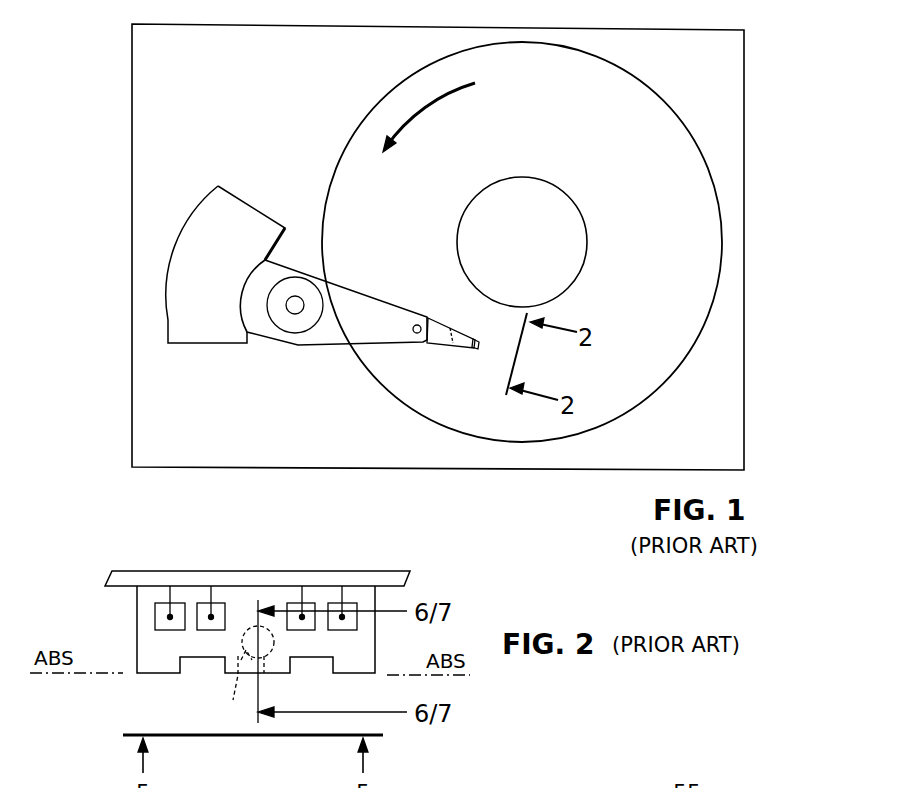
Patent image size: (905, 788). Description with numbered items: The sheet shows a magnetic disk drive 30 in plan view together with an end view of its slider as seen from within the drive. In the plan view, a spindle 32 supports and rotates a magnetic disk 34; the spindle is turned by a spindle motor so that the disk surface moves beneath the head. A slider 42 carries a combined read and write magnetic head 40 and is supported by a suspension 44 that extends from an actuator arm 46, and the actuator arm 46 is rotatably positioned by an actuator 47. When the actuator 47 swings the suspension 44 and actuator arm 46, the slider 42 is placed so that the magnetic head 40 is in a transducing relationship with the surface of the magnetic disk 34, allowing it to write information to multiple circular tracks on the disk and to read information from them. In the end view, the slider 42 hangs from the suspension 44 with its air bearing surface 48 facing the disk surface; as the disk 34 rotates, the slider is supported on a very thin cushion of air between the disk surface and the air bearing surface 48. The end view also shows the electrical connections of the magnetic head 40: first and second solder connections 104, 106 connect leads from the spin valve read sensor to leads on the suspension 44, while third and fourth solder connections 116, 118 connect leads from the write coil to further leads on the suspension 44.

In FIG. 1, the magnetic disk drive 30 is at (766, 64).
In FIG. 1, the spindle 32 is at (563, 187).
In FIG. 1, the magnetic disk 34 is at (668, 263).
In FIG. 1, the magnetic head 40 is at (483, 350).
In FIG. 2, the magnetic head 40 is at (238, 700).
In FIG. 1, the slider 42 is at (478, 340).
In FIG. 2, the slider 42 is at (137, 615).
In FIG. 1, the suspension 44 is at (440, 343).
In FIG. 2, the suspension 44 is at (257, 578).
In FIG. 1, the actuator arm 46 is at (380, 305).
In FIG. 1, the actuator 47 is at (258, 215).
In FIG. 2, the air bearing surface 48 is at (57, 676).
In FIG. 2, the first solder connection 104 is at (155, 610).
In FIG. 2, the second solder connection 106 is at (328, 608).
In FIG. 2, the third solder connection 116 is at (197, 610).
In FIG. 2, the fourth solder connection 118 is at (288, 608).